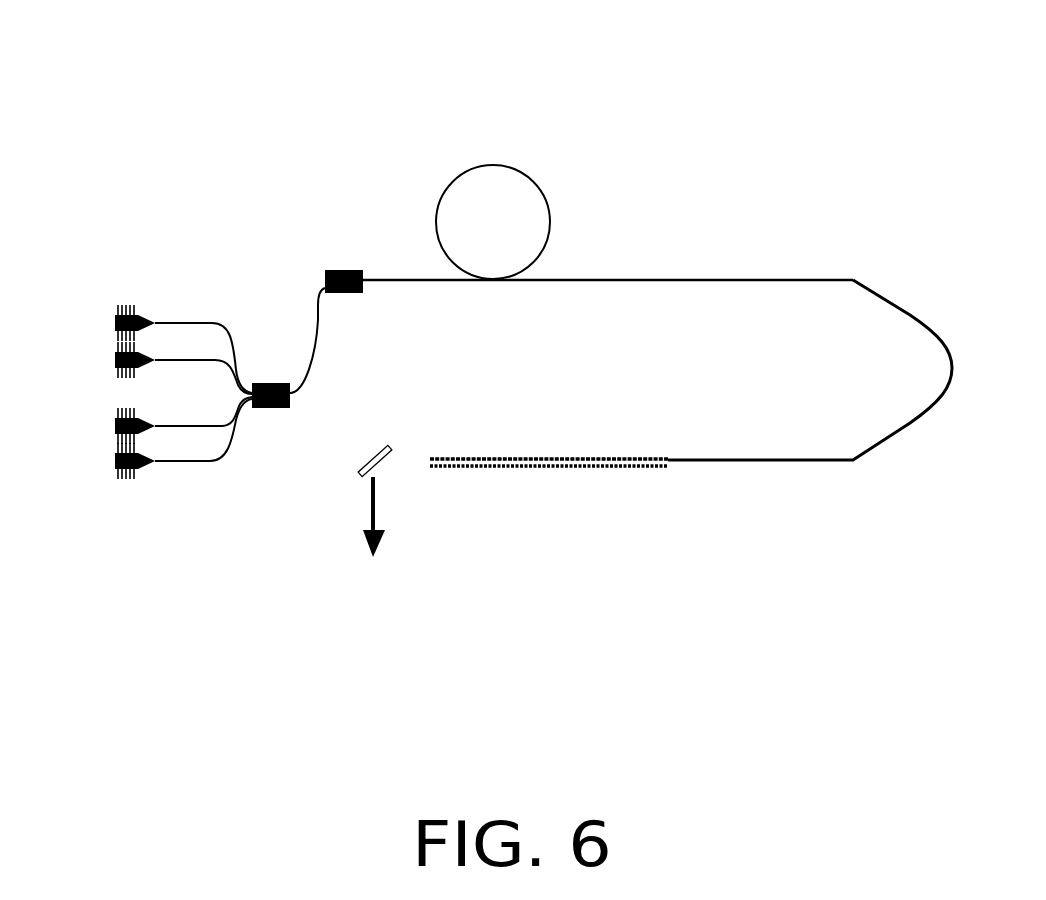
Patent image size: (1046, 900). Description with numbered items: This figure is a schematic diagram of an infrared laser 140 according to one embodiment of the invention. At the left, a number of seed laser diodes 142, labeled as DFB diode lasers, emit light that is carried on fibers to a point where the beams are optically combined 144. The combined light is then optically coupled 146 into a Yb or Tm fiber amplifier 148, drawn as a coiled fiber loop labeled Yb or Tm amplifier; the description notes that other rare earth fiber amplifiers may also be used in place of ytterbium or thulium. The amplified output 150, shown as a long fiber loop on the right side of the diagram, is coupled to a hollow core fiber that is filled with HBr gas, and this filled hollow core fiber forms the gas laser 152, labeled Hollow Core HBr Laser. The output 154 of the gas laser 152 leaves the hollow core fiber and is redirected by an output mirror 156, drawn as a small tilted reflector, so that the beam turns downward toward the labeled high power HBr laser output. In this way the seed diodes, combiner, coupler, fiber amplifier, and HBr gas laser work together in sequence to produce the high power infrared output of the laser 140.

The infrared laser 140 is at (573, 45).
The seed laser diodes 142 is at (179, 324).
The optical combiner 144 is at (289, 407).
The optical coupler 146 is at (338, 268).
The Yb or Tm fiber amplifier 148 is at (556, 218).
The amplified output 150 is at (871, 277).
The gas laser 152 is at (503, 457).
The output 154 is at (380, 521).
The output mirror 156 is at (380, 443).